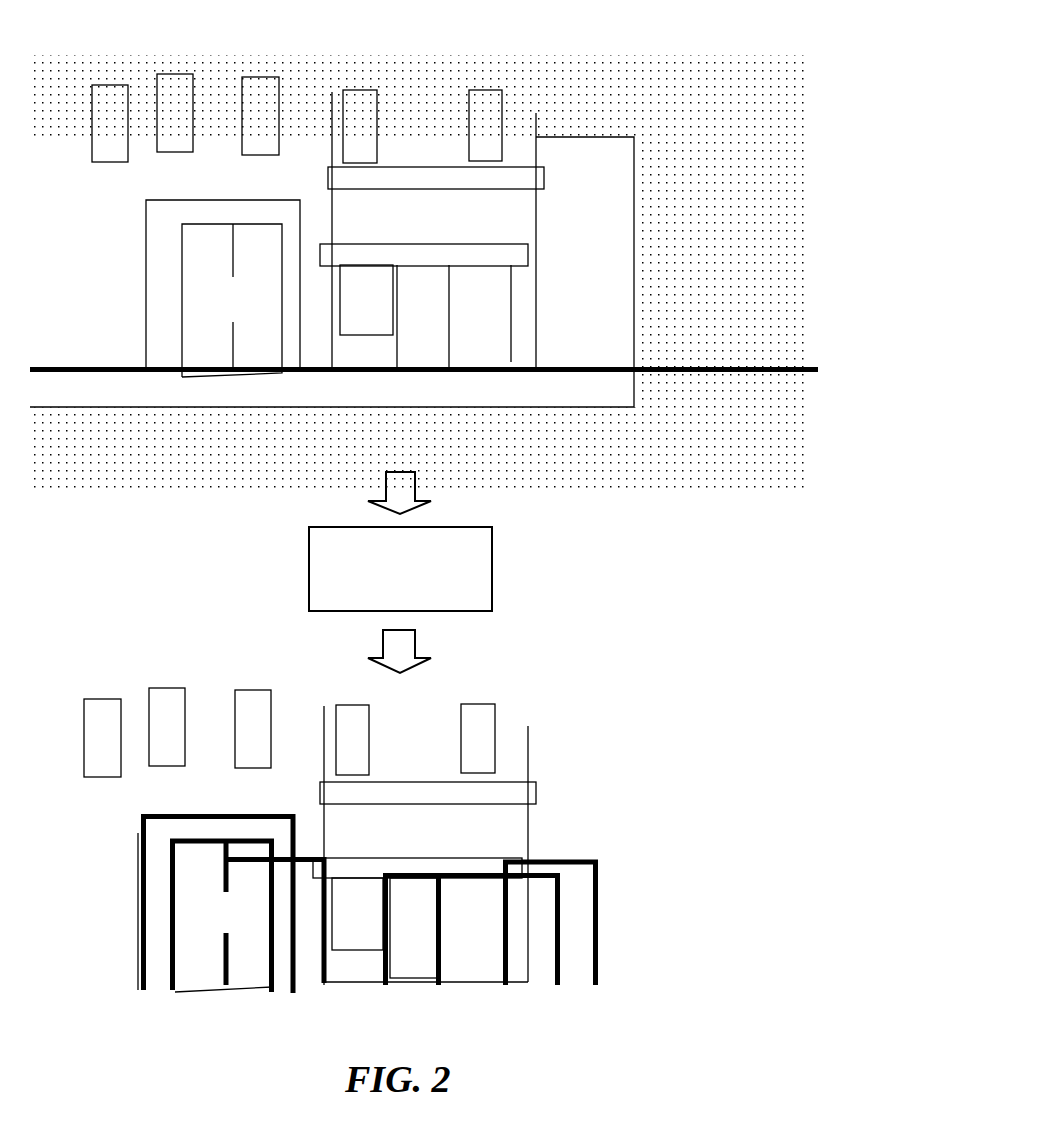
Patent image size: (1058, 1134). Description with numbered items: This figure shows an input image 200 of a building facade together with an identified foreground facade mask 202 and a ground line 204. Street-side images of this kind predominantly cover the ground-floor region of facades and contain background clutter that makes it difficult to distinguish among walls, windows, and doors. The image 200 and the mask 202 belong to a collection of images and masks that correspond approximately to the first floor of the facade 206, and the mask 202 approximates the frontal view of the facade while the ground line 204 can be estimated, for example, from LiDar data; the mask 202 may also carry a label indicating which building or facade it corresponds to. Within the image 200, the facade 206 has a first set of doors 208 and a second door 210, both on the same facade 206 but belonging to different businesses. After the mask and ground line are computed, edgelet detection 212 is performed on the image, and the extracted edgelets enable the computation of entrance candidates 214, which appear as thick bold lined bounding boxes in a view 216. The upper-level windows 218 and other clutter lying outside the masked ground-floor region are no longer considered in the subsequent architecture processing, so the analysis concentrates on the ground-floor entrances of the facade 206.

The input image 200 is at (736, 24).
The foreground facade mask 202 is at (597, 94).
The ground line 204 is at (682, 366).
The facade 206 is at (83, 260).
The first set of doors 208 is at (250, 308).
The second door 210 is at (440, 330).
The edgelet detection 212 is at (460, 527).
The entrance candidates 214 is at (218, 815).
The view 216 is at (708, 713).
The upper-level windows 218 is at (122, 656).